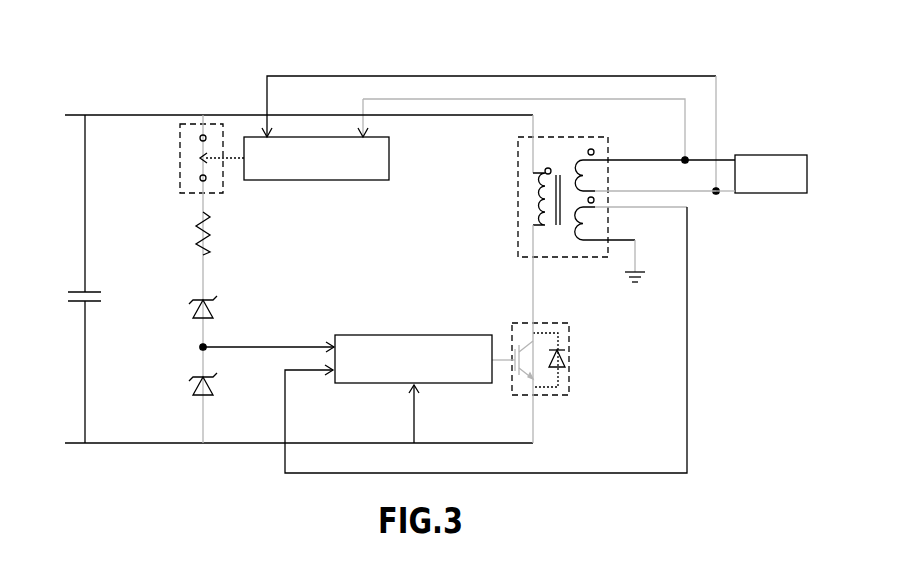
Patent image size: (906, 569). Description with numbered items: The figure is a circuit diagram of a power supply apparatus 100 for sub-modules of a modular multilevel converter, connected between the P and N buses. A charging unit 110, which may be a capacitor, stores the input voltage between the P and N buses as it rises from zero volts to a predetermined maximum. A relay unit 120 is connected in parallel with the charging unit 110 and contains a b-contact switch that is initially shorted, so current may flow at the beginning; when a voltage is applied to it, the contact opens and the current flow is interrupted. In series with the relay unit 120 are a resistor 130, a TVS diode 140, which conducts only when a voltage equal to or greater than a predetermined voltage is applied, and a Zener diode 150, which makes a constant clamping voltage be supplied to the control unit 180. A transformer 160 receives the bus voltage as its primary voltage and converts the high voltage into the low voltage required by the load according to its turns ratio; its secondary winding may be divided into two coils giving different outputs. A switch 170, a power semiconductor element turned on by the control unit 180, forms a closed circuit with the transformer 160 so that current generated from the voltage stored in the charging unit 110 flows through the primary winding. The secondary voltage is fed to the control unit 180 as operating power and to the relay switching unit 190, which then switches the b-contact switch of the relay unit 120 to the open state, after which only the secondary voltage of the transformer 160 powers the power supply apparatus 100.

The power supply apparatus 100 is at (260, 55).
The charging unit 110 is at (72, 289).
The relay unit 120 is at (181, 151).
The resistor 130 is at (217, 232).
The TVS diode 140 is at (191, 321).
The Zener diode 150 is at (191, 399).
The transformer 160 is at (518, 196).
The switch 170 is at (570, 355).
The control unit 180 is at (441, 334).
The relay switching unit 190 is at (390, 158).